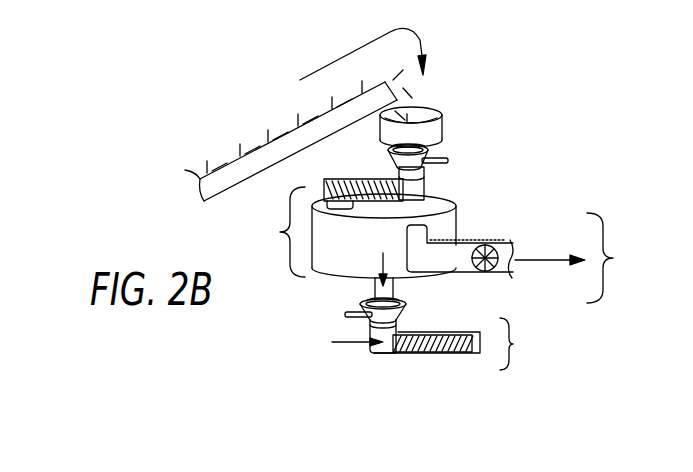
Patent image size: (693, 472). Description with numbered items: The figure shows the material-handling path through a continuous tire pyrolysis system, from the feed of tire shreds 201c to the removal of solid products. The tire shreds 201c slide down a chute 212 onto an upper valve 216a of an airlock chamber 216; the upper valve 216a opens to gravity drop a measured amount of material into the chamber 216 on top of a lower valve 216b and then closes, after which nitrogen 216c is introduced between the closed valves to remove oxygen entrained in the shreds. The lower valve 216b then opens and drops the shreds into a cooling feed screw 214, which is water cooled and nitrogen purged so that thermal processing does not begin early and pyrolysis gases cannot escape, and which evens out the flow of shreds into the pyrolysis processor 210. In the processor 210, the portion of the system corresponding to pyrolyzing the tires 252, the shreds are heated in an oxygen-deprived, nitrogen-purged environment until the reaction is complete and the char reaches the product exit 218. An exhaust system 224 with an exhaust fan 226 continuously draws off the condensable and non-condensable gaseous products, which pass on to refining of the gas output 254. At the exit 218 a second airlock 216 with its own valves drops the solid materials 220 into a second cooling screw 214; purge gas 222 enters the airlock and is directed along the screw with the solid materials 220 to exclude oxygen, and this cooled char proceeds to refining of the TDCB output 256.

The tire shreds 201c is at (352, 83).
The chute 212 is at (440, 108).
The airlock chamber 216 is at (388, 162).
The upper valve 216a is at (435, 148).
The lower valve 216b is at (433, 172).
The nitrogen 216c is at (450, 160).
The cooling screw 214 is at (348, 185).
The pyrolysis processor 210 is at (327, 273).
The product exit 218 is at (383, 262).
The exhaust system 224 is at (436, 257).
The exhaust fan 226 is at (492, 245).
The refining of the gas output 254 is at (582, 258).
The pyrolyzing the tires 252 is at (272, 232).
The purge gas 222 is at (348, 344).
The solid materials 220 is at (486, 351).
The refining the TDCB output 256 is at (529, 344).